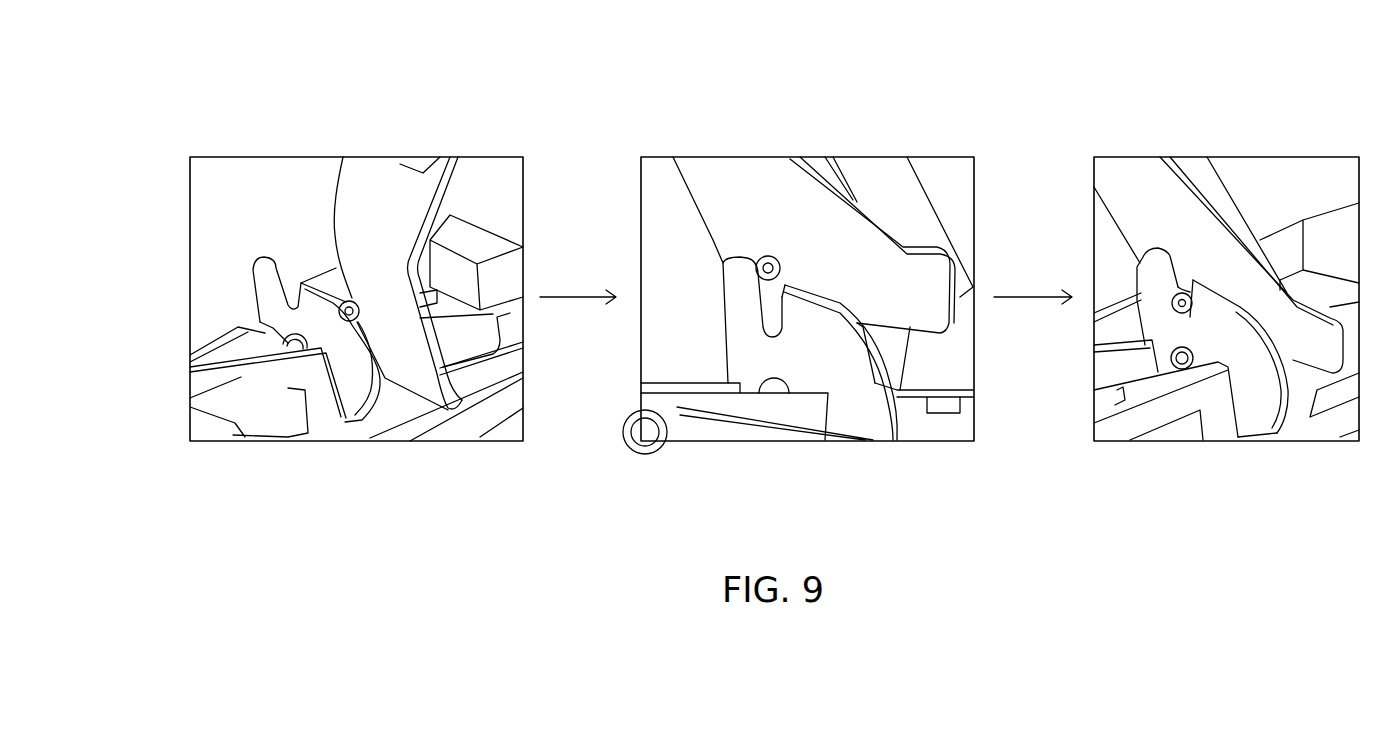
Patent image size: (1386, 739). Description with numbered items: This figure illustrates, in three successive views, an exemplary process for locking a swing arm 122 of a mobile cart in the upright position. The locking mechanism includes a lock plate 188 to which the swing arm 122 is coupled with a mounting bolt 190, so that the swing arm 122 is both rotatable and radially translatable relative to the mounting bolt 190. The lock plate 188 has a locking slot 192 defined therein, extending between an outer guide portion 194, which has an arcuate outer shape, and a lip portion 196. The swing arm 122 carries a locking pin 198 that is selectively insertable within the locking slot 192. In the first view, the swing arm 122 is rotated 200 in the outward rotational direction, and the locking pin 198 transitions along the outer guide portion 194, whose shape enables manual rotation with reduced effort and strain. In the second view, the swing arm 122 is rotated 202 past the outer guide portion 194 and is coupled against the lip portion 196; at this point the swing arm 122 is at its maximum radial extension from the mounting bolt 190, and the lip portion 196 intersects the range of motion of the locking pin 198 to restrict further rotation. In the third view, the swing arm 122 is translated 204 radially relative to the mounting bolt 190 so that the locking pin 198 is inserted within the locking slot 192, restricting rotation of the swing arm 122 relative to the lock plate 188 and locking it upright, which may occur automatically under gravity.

The swing arm 122 is at (358, 175).
The lock plate 188 is at (241, 248).
The mounting bolt 190 is at (262, 324).
The locking slot 192 is at (287, 268).
The outer guide portion 194 is at (362, 385).
The lip portion 196 is at (262, 287).
The locking pin 198 is at (350, 300).
The rotating the swing arm 200 is at (455, 85).
The rotating the swing arm past the outer guide portion 202 is at (907, 85).
The translating the swing arm radially 204 is at (1295, 85).